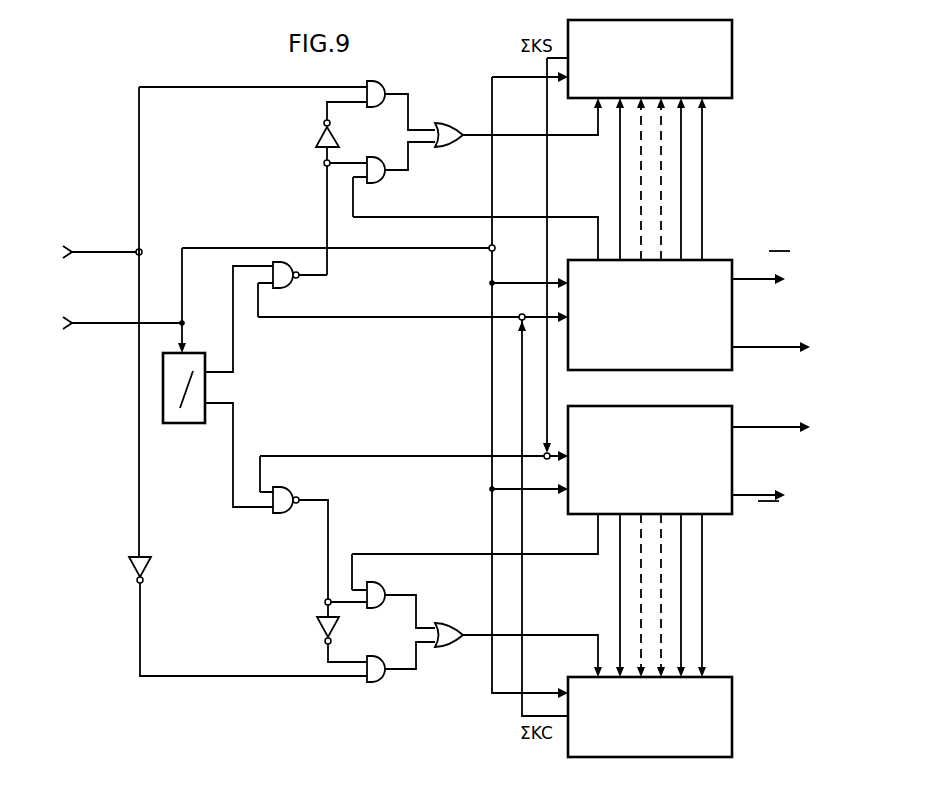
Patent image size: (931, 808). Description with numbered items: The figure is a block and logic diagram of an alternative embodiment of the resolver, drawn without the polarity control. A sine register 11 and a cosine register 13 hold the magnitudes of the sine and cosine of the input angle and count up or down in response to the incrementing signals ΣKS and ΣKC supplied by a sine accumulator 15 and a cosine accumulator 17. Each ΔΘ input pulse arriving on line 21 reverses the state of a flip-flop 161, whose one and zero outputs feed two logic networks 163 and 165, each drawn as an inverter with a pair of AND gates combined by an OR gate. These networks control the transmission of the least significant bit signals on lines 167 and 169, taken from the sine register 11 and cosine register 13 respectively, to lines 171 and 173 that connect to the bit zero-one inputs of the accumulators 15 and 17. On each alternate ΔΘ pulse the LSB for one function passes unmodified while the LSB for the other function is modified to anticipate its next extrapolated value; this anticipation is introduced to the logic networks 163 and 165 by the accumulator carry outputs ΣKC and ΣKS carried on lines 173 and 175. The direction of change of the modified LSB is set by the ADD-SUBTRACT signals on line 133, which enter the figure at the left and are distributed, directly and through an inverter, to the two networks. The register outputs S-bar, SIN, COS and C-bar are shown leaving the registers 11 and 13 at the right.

The sine accumulator 15 is at (734, 44).
The sine register 11 is at (734, 313).
The cosine register 13 is at (734, 457).
The cosine accumulator 17 is at (733, 702).
The ADD-SUBTRACT signal line 133 is at (115, 254).
The ΔΘ input line 21 is at (108, 327).
The flip-flop 161 is at (181, 426).
The logic network 163 is at (308, 183).
The logic network 165 is at (306, 596).
The sine LSB line 167 is at (595, 216).
The cosine LSB line 169 is at (588, 556).
The sine accumulator bit 01 input line 171 is at (590, 141).
The cosine accumulator bit 01 input and carry line 173 is at (469, 320).
The sine accumulator carry line 175 is at (462, 454).